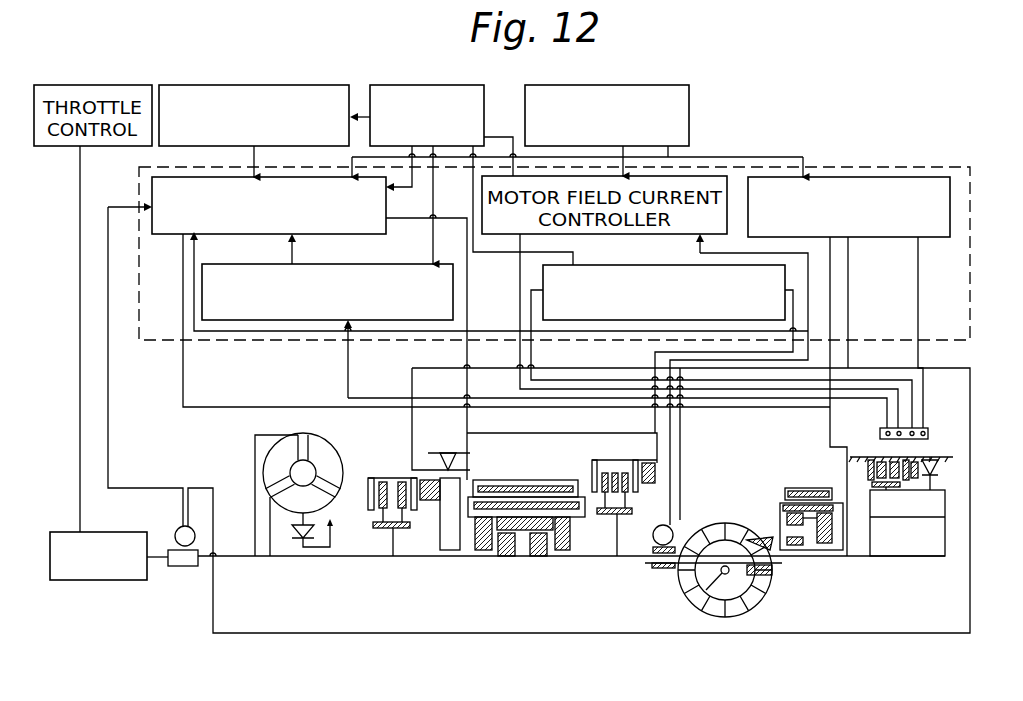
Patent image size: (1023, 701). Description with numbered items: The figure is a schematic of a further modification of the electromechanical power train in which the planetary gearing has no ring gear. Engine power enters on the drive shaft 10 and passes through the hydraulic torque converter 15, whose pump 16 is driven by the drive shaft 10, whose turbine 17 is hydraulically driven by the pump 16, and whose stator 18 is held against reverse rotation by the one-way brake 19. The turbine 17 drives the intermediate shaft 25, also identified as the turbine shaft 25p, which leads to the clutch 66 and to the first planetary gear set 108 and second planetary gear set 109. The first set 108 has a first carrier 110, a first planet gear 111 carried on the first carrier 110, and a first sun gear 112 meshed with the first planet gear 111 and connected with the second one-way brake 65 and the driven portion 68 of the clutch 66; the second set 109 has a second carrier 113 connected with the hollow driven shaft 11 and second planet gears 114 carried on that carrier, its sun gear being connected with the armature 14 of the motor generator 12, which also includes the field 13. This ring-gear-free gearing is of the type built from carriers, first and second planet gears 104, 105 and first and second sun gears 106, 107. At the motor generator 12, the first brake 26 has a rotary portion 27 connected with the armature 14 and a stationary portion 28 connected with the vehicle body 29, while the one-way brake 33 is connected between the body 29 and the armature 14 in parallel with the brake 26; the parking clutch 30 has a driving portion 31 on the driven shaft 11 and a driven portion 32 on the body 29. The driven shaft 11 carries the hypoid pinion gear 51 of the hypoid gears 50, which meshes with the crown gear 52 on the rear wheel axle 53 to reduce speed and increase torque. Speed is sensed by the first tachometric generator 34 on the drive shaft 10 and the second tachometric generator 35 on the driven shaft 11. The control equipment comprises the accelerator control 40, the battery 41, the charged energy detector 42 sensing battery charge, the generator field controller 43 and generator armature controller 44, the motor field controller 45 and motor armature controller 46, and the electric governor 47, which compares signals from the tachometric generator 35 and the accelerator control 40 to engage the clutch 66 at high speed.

The drive shaft 10 is at (155, 580).
The driven shaft 11 is at (890, 557).
The motor generator 12 is at (910, 512).
The field element 13 is at (945, 505).
The armature 14 is at (945, 540).
The hydraulic torque converter 15 is at (287, 505).
The pump 16 is at (322, 445).
The turbine 17 is at (268, 468).
The stator 18 is at (303, 500).
The one-way brake 19 is at (283, 540).
The intermediate shaft 25 is at (655, 556).
The turbine shaft 25p is at (367, 556).
The first brake 26 is at (617, 556).
The rotary portion 27 is at (620, 512).
The stationary portion 28 is at (612, 462).
The vehicle body 29 is at (642, 462).
The second clutch 30 is at (868, 500).
The driving portion 31 is at (868, 470).
The driven portion 32 is at (865, 455).
The one-way brake 33 is at (940, 470).
The first tachometric generator 34 is at (176, 530).
The second tachometric generator 35 is at (672, 530).
The accelerator control 40 is at (616, 85).
The battery 41 is at (430, 85).
The charged energy detector 42 is at (262, 85).
The generator field controller 43 is at (172, 236).
The generator armature controller 44 is at (376, 264).
The motor field controller 45 is at (712, 172).
The motor armature controller 46 is at (650, 265).
The electric governor 47 is at (888, 237).
The hypoid gears 50 is at (724, 598).
The hypoid pinion gear 51 is at (768, 575).
The crown gear 52 is at (735, 628).
The rear wheel axle 53 is at (705, 590).
The second one-way brake 65 is at (440, 453).
The clutch 66 is at (400, 556).
The driven portion of clutch 68 is at (393, 478).
The first planet gear 104 is at (790, 530).
The second planet gear 105 is at (790, 495).
The first sun gear 106 is at (795, 550).
The second sun gear 107 is at (830, 548).
The first planetary gear set 108 is at (508, 556).
The second planetary gear set 109 is at (540, 556).
The first carrier 110 is at (466, 517).
The first planet gear 111 is at (475, 482).
The first sun gear 112 is at (480, 550).
The second carrier 113 is at (578, 520).
The second planet gears 114 is at (565, 552).